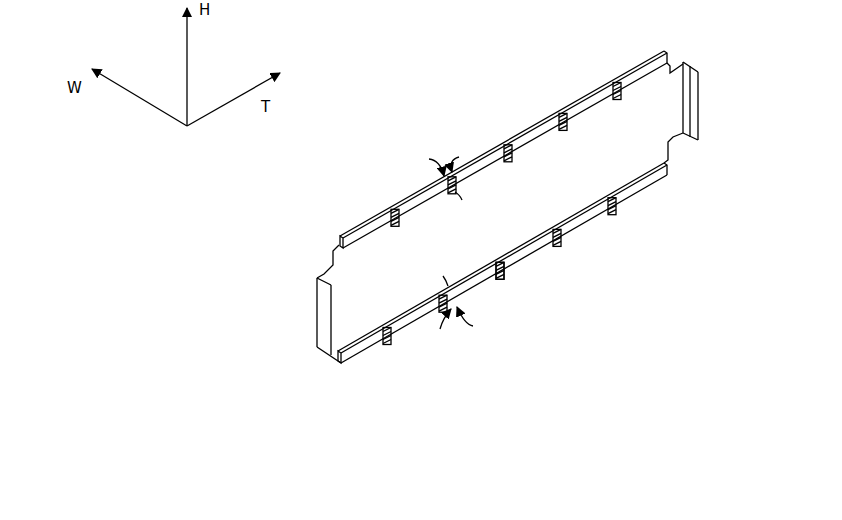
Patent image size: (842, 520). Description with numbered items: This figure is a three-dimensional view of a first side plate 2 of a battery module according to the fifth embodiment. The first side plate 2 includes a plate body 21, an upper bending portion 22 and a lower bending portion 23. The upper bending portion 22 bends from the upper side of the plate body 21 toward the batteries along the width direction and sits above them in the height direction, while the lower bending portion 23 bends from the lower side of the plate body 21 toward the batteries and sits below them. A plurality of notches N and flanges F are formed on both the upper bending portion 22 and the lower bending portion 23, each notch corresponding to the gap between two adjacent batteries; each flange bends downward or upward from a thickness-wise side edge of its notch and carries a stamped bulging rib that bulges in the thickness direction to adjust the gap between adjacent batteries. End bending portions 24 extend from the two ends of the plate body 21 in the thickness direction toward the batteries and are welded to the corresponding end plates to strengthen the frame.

The first side plate 2 is at (520, 109).
The plate body 21 is at (523, 228).
The upper bending portion 22 is at (419, 191).
The lower bending portion 23 is at (494, 289).
The end bending portion 24 is at (698, 110).